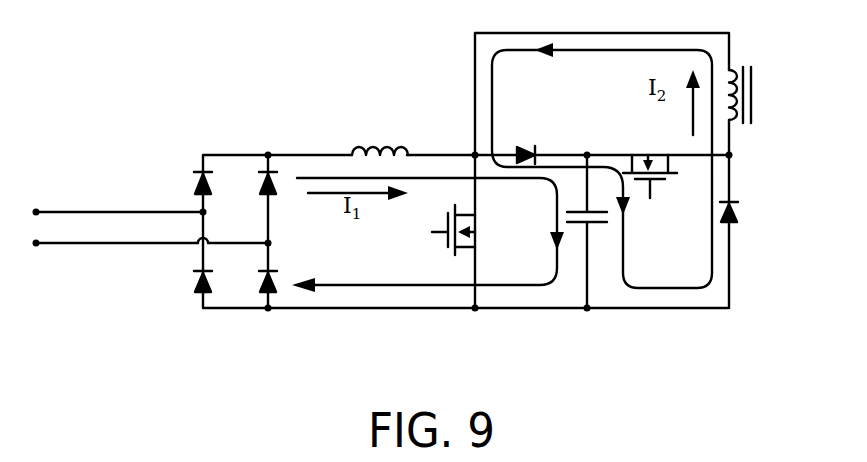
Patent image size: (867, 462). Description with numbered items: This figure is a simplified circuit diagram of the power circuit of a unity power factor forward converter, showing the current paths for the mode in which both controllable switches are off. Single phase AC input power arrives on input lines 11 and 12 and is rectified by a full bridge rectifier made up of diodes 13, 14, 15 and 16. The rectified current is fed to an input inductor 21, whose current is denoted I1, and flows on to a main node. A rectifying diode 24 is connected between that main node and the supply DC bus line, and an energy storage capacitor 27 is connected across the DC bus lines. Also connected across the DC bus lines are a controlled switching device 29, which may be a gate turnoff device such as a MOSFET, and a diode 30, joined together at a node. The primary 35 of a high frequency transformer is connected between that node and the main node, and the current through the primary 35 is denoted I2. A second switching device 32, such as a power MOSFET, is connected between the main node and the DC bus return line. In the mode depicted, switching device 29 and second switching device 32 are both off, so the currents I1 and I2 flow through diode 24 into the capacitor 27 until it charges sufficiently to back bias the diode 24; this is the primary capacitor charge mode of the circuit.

The input line 11 is at (107, 210).
The input line 12 is at (128, 247).
The diode 13 is at (195, 185).
The diode 14 is at (197, 277).
The diode 15 is at (258, 183).
The diode 16 is at (257, 277).
The input inductor 21 is at (390, 142).
The rectifying diode 24 is at (520, 140).
The energy storage capacitor 27 is at (593, 225).
The controlled switching device 29 is at (657, 182).
The diode 30 is at (740, 210).
The second switching device 32 is at (448, 240).
The primary 35 is at (738, 68).